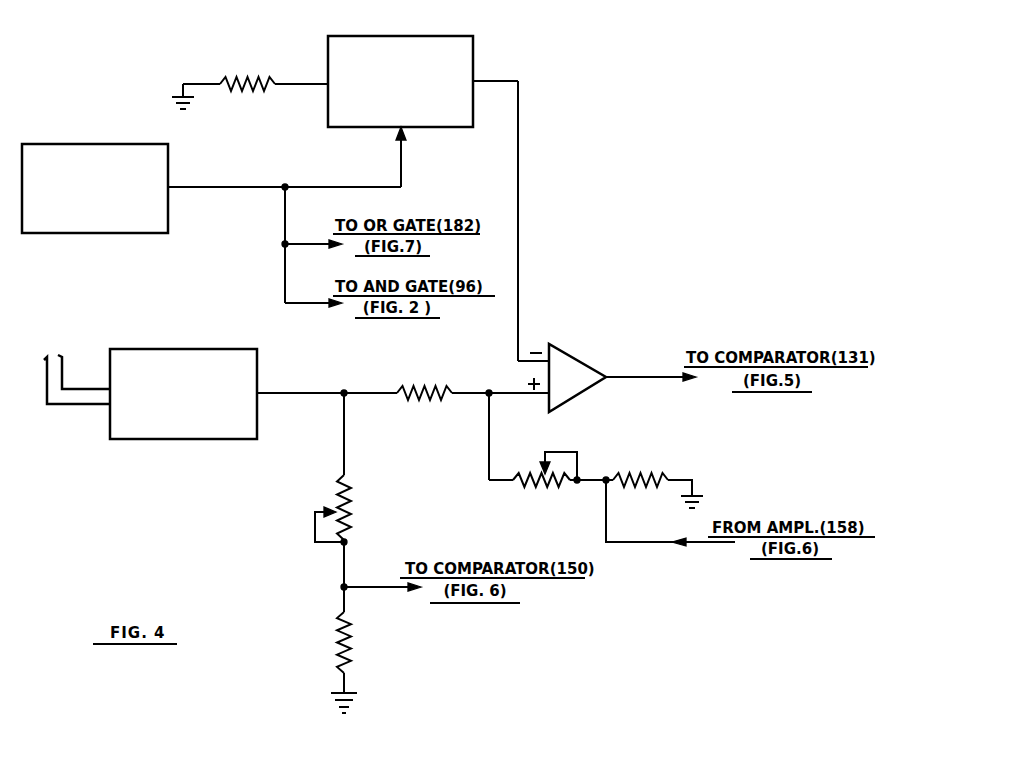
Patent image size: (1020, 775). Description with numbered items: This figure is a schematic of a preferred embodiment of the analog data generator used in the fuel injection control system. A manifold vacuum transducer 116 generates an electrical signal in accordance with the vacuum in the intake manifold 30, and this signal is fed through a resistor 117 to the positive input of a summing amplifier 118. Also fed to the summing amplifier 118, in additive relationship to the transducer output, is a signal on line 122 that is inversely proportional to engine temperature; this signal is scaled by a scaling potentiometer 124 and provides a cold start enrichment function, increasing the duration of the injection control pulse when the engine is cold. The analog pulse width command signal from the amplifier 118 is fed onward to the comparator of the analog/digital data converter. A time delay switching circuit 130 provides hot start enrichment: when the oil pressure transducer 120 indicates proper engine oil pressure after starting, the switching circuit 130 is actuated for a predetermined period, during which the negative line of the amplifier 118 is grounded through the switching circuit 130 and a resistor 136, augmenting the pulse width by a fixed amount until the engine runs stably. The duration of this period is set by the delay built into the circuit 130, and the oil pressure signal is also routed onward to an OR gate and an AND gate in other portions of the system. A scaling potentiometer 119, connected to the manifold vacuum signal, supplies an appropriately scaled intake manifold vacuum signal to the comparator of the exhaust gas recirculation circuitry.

The intake manifold 30 is at (67, 398).
The manifold vacuum transducer 116 is at (140, 358).
The resistor 117 is at (432, 398).
The summing amplifier 118 is at (567, 366).
The scaling potentiometer 119 is at (347, 505).
The oil pressure transducer 120 is at (57, 160).
The line 122 is at (656, 545).
The scaling potentiometer 124 is at (553, 450).
The time delay switching circuit 130 is at (438, 48).
The resistor 136 is at (265, 80).